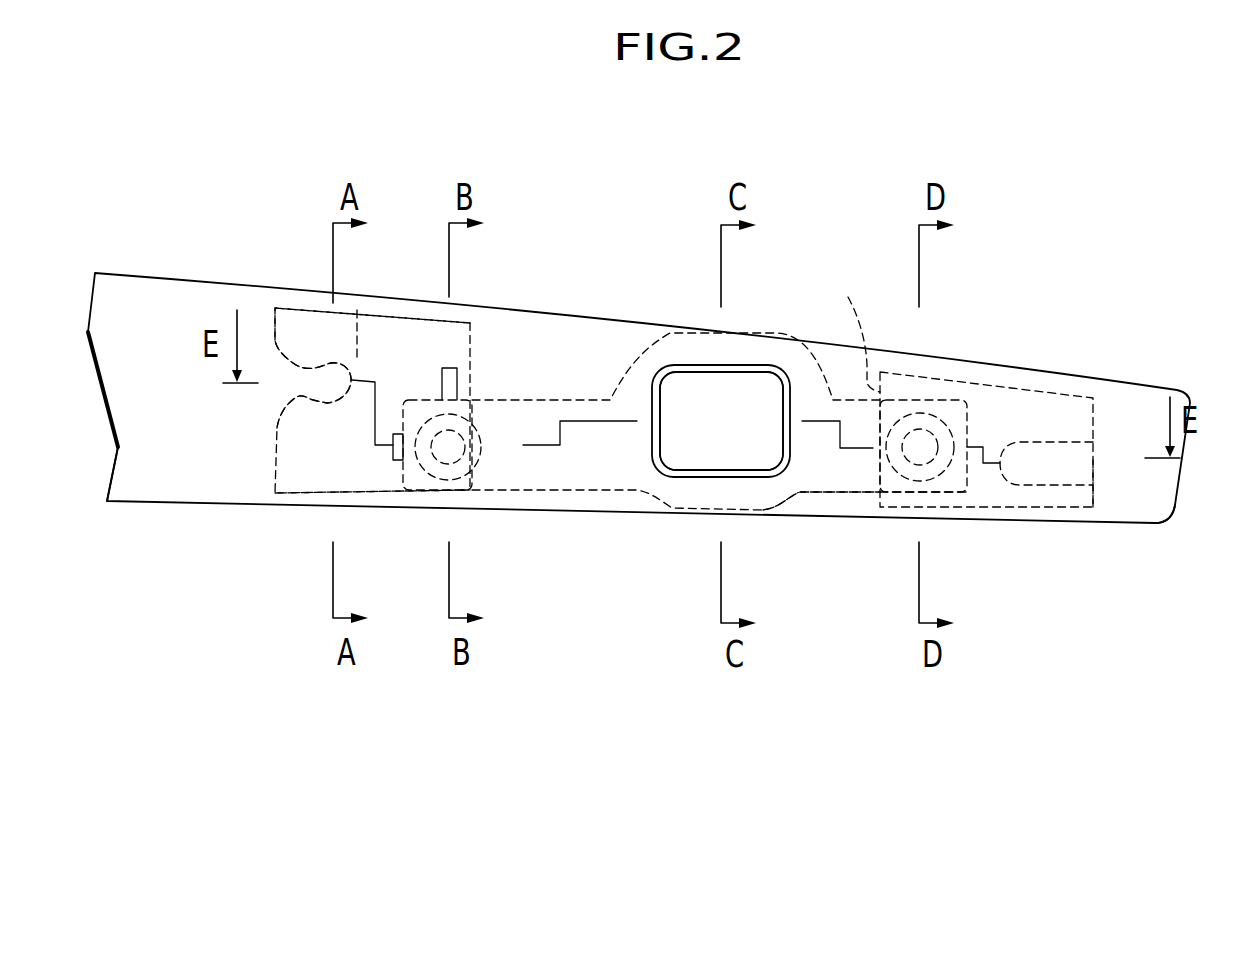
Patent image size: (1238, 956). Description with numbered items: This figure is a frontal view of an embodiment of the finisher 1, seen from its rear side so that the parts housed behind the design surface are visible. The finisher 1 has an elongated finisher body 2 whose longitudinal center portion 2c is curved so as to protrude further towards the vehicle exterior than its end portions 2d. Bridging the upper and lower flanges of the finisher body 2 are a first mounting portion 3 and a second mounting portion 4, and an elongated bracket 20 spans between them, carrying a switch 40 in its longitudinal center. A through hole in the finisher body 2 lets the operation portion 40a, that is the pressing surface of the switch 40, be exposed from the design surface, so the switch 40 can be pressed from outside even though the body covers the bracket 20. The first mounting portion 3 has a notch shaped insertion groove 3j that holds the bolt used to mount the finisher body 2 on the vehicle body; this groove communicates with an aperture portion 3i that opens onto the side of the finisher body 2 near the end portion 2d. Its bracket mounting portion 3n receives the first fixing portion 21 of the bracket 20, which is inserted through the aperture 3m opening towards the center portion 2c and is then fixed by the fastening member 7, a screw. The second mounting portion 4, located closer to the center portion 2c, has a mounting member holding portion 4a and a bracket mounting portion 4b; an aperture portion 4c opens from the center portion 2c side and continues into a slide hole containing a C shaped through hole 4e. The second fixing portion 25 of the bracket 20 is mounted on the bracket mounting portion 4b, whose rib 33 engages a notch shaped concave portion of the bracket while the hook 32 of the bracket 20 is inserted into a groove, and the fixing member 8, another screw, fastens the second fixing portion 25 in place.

The finisher 1 is at (1017, 255).
The finisher body 2 is at (162, 268).
The center portion 2c is at (148, 477).
The end portion 2d is at (1137, 503).
The first mounting portion 3 is at (1110, 416).
The aperture portion 3i is at (1092, 470).
The insertion groove 3j is at (1047, 487).
The aperture 3m is at (857, 324).
The bracket mounting portion 3n is at (943, 488).
The second mounting portion 4 is at (253, 488).
The mounting member holding portion 4a is at (290, 327).
The bracket mounting portion 4b is at (413, 500).
The aperture portion 4c is at (283, 385).
The through hole 4e is at (357, 318).
The fastening member 7 is at (935, 410).
The fixing member 8 is at (482, 455).
The bracket 20 is at (594, 472).
The first fixing portion 21 is at (848, 482).
The second fixing portion 25 is at (478, 495).
The hook 32 is at (393, 455).
The rib 33 is at (458, 390).
The switch 40 is at (704, 366).
The operation portion 40a is at (705, 445).